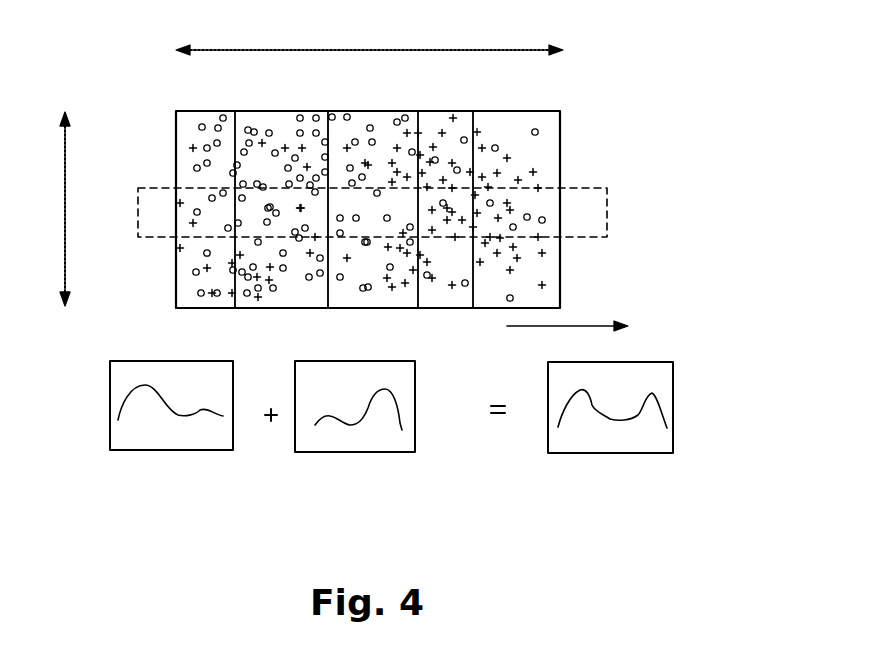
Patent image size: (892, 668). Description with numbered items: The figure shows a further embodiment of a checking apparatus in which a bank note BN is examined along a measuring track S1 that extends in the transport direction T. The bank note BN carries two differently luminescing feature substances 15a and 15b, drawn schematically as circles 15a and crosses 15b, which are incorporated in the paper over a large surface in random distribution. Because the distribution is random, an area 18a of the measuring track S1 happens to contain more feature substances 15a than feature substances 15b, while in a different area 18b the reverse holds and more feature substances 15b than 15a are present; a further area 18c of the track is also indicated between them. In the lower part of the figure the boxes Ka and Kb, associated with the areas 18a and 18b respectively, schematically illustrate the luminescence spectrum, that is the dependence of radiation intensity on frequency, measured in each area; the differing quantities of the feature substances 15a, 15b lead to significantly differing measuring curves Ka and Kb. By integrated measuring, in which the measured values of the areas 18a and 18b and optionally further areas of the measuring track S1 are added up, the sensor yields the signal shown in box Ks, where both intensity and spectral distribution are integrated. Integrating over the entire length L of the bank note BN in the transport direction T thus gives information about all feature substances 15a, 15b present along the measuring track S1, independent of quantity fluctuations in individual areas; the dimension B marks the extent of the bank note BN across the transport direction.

The feature substance 15a is at (202, 124).
The feature substance 15b is at (487, 130).
The area 18a is at (237, 165).
The area 18b is at (485, 187).
The middle band segment 18c is at (362, 167).
The bank note BN is at (560, 152).
The measuring track S1 is at (538, 205).
The length of the bank note L is at (369, 34).
The width of band B is at (51, 209).
The transport direction T is at (567, 337).
The measuring curve Ka is at (265, 222).
The measuring curve Kb is at (462, 220).
The integrated signal Ks is at (630, 414).